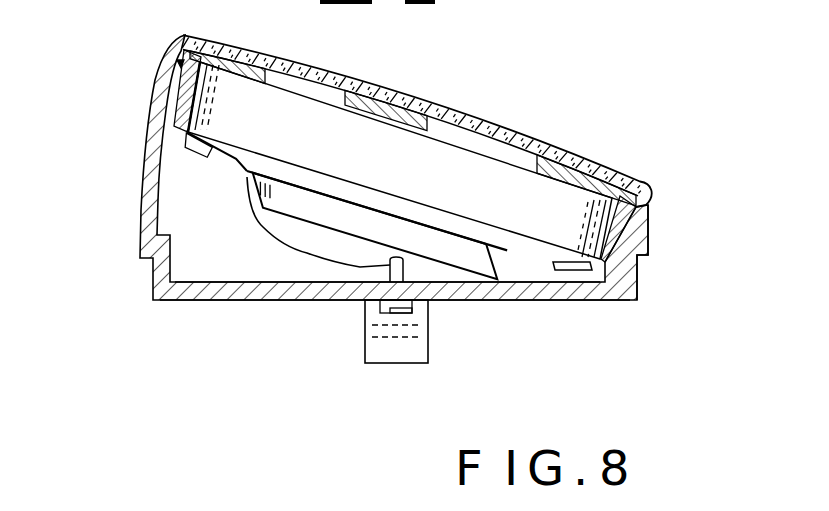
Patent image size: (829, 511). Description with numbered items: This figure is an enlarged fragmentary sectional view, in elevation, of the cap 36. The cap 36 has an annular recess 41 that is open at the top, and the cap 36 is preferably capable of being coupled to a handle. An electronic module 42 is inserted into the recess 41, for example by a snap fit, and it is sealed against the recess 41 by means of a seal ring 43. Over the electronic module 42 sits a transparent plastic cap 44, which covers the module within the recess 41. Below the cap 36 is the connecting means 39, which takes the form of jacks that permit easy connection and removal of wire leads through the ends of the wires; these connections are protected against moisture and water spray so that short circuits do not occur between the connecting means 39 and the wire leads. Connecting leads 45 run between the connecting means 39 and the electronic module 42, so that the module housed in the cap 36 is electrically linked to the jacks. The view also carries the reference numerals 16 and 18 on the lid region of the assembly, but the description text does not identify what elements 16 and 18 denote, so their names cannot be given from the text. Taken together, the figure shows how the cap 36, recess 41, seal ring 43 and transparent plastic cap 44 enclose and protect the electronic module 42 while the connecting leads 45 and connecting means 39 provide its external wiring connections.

The lid assembly 16 is at (381, 72).
The inner lid layer 18 is at (447, 140).
The cap 36 is at (130, 140).
The connecting means 39 is at (412, 306).
The annular recess 41 is at (178, 302).
The electronic module 42 is at (471, 169).
The seal ring 43 is at (649, 221).
The transparent plastic cap 44 is at (305, 23).
The connecting leads 45 is at (326, 260).